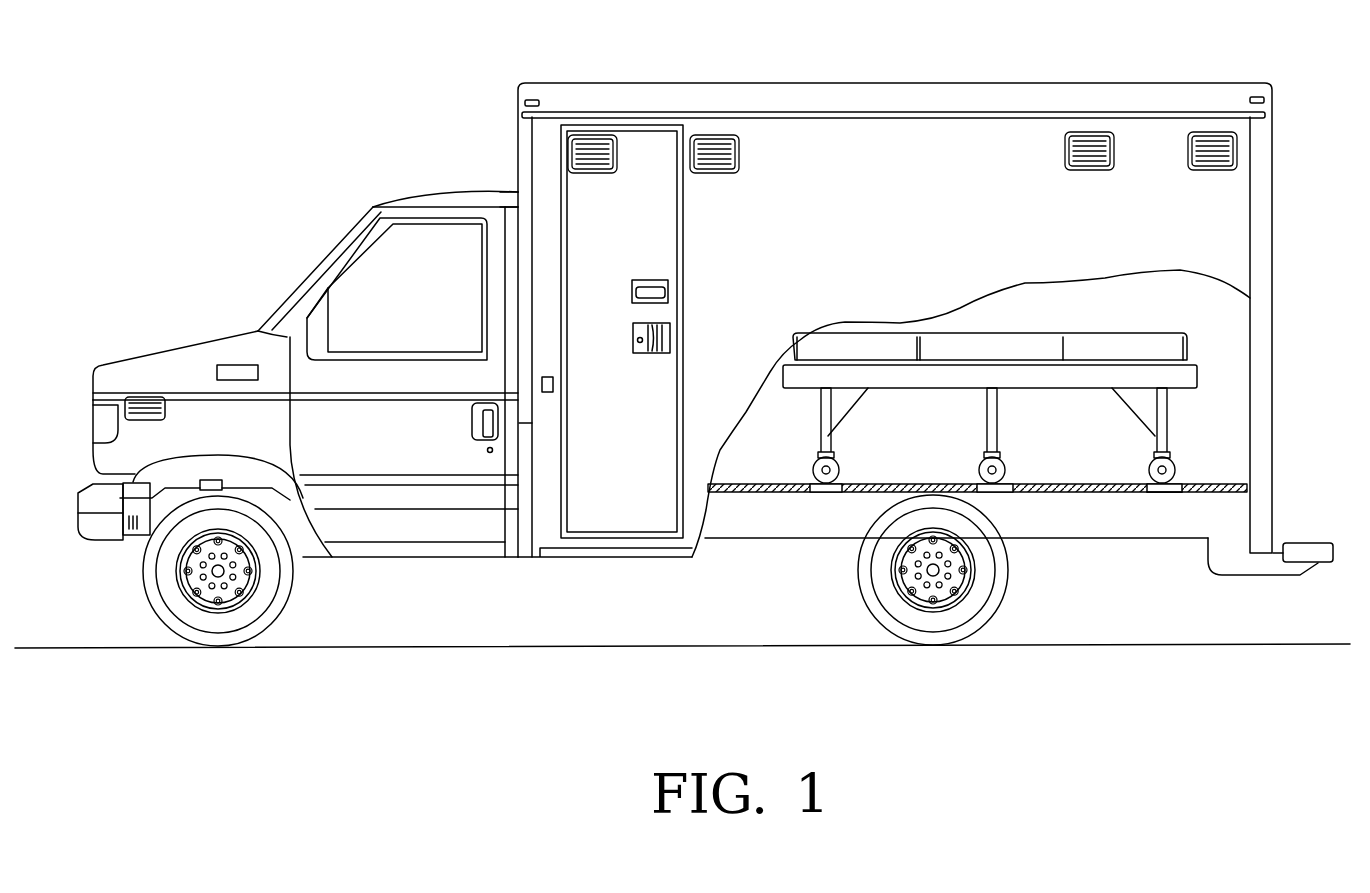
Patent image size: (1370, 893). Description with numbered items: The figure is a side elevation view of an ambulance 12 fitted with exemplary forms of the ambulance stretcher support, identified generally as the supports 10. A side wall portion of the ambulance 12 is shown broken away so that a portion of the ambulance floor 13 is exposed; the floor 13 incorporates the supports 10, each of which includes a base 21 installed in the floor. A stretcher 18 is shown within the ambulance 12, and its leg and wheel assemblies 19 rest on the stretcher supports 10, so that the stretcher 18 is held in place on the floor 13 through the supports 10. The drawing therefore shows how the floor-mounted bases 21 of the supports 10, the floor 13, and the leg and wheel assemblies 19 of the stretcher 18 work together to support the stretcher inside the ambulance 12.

The ambulance stretcher support 10 is at (1192, 470).
The ambulance 12 is at (1043, 62).
The ambulance floor 13 is at (875, 478).
The stretcher 18 is at (1140, 325).
The leg and wheel assemblies 19 is at (1003, 467).
The base 21 is at (828, 496).